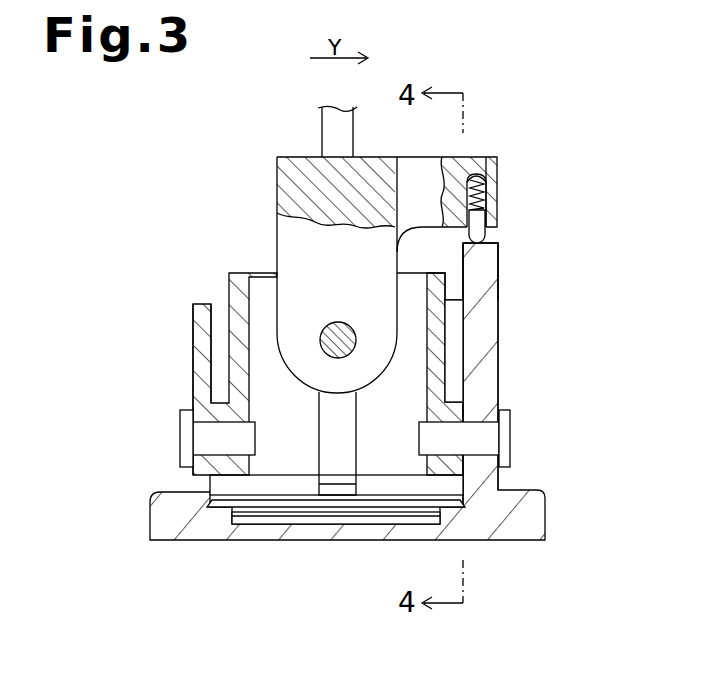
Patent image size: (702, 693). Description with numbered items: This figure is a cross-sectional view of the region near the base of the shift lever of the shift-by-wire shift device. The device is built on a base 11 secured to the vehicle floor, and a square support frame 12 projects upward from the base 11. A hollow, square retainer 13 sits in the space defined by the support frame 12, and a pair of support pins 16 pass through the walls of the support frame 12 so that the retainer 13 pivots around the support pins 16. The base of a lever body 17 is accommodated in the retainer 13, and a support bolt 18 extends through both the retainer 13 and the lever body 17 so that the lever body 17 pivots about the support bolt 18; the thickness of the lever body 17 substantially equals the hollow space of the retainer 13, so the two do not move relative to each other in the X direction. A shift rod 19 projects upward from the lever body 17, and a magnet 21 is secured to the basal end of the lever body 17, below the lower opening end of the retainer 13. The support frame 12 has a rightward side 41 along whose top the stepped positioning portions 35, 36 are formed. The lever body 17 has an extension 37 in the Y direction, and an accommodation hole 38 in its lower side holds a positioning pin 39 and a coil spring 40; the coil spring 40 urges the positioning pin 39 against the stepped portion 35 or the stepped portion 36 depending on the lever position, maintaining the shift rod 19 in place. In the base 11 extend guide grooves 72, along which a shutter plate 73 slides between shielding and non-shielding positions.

The base 11 is at (527, 511).
The support frame 12 is at (198, 327).
The retainer 13 is at (232, 289).
The support pins 16 is at (180, 440).
The lever body 17 is at (295, 233).
The support bolt 18 is at (347, 325).
The shift rod 19 is at (322, 127).
The magnet 21 is at (360, 493).
The stepped portion 35 is at (462, 242).
The stepped portion 36 is at (497, 258).
The extension 37 is at (497, 172).
The accommodation hole 38 is at (470, 174).
The positioning pin 39 is at (490, 240).
The coil spring 40 is at (486, 192).
The rightward side 41 is at (498, 322).
The guide grooves 72 is at (218, 508).
The shutter plate 73 is at (268, 513).